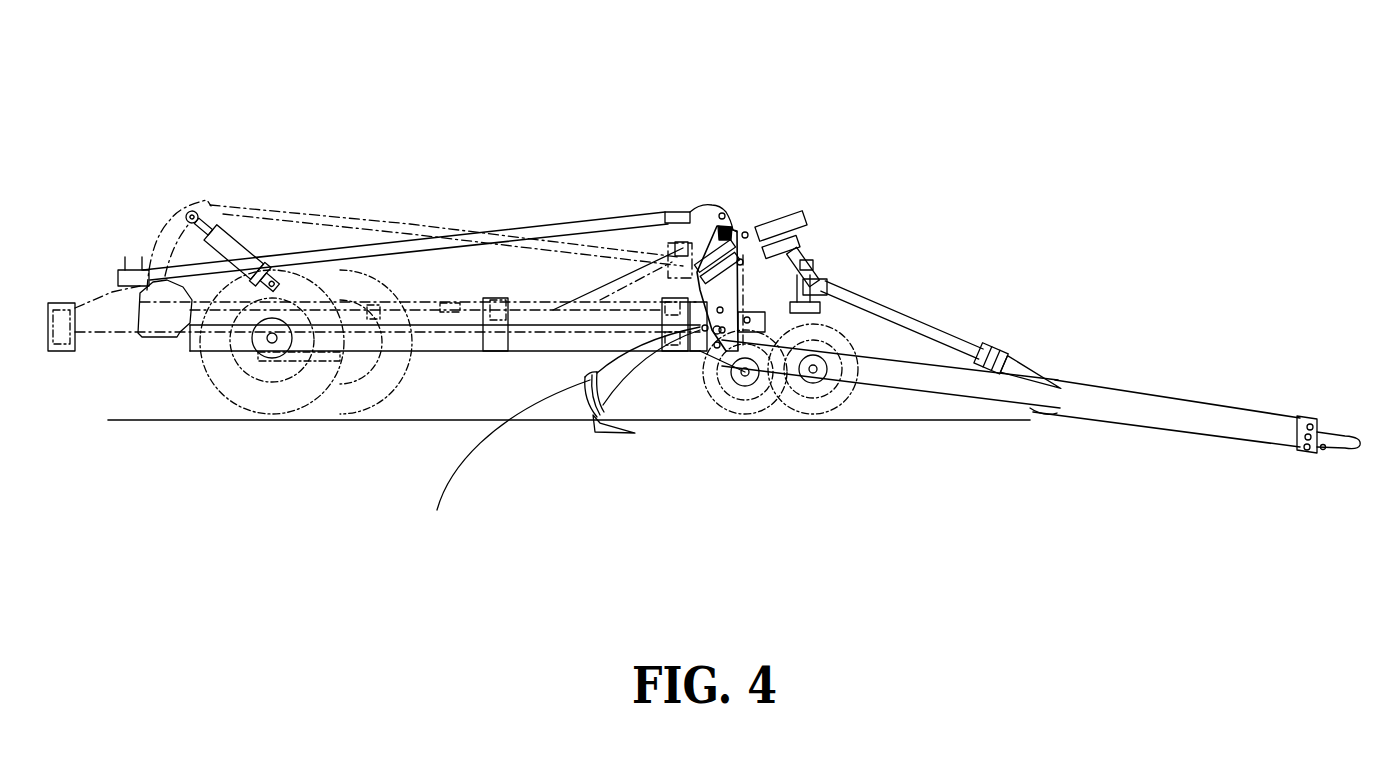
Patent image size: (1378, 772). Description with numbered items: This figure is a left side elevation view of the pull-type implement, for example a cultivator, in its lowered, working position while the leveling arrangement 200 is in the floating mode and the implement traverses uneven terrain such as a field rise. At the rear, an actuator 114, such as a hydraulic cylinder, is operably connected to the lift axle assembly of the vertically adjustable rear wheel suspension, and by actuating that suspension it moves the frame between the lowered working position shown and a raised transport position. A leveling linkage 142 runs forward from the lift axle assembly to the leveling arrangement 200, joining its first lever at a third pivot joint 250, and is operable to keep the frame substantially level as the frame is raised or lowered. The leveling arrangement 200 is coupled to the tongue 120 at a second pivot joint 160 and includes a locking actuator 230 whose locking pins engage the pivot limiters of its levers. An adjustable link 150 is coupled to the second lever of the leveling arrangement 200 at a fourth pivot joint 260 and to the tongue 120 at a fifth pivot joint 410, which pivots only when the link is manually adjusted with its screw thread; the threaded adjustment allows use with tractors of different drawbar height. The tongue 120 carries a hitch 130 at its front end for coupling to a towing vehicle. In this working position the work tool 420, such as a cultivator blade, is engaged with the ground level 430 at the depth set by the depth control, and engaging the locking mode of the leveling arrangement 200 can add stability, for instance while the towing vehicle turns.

The actuator 114 is at (252, 240).
The leveling linkage 142 is at (490, 227).
The third pivot joint 250 is at (728, 207).
The leveling arrangement 200 is at (736, 190).
The locking actuator 230 is at (780, 217).
The fourth pivot joint 260 is at (925, 404).
The tongue 120 is at (1172, 415).
The hitch 130 is at (1345, 437).
The ground level 430 is at (176, 421).
The work tool 420 is at (555, 434).
The second pivot joint 160 is at (757, 300).
The adjustable link 150 is at (977, 357).
The fifth pivot joint 410 is at (1028, 376).